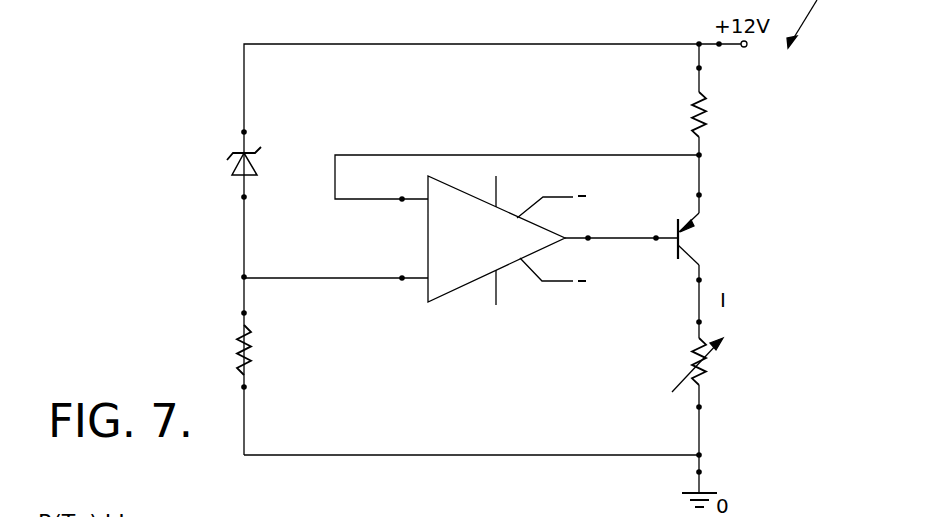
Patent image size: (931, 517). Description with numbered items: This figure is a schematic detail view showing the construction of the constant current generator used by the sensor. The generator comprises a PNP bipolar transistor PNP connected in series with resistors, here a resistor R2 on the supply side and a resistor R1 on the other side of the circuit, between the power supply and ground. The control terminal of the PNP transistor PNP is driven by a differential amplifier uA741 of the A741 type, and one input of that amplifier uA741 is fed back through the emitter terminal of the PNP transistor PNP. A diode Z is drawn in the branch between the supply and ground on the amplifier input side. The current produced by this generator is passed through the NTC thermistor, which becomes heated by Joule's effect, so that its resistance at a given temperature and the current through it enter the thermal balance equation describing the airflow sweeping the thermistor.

The resistor R1 is at (225, 350).
The resistor R2 is at (681, 114).
The PNP bipolar transistor PNP is at (707, 239).
The differential amplifier of the A741 type uA741 is at (499, 256).
The zener diode Z is at (244, 161).